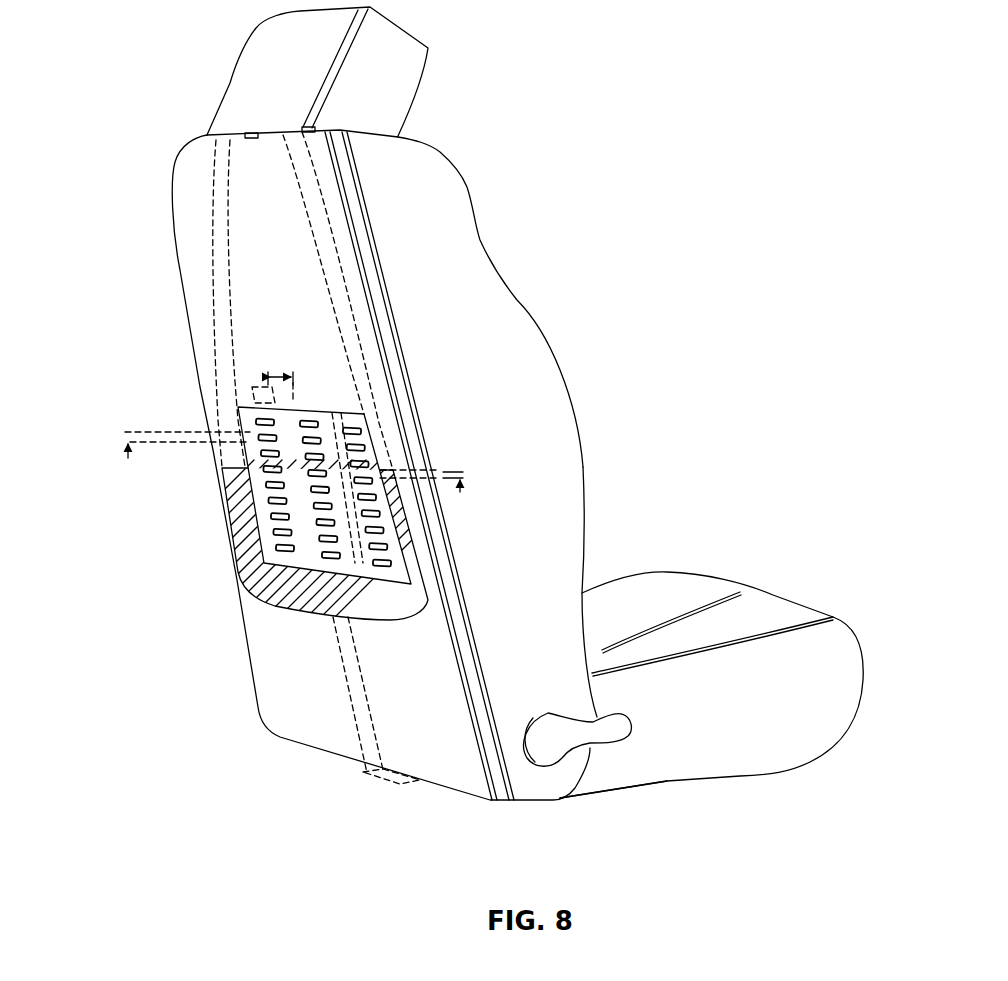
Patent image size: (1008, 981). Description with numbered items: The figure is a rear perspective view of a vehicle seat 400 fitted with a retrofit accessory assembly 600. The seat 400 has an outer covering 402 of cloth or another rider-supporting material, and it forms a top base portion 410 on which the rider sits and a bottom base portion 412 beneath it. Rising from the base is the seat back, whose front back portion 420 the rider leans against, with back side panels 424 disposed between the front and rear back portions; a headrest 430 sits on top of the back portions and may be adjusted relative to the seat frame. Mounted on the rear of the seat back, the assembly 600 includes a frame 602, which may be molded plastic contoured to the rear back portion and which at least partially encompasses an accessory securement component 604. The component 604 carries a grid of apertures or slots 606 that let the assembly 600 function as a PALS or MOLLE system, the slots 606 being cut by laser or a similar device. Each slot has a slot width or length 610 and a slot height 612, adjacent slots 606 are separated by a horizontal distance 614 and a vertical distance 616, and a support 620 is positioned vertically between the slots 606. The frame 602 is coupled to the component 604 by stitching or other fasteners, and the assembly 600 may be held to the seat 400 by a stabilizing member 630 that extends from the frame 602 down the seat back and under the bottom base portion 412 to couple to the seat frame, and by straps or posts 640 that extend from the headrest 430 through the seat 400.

The seat 400 is at (545, 45).
The outer covering 402 is at (572, 513).
The top base portion 410 is at (711, 701).
The bottom base portion 412 is at (677, 783).
The front back portion 420 is at (412, 466).
The back side panels 424 is at (523, 333).
The headrest 430 is at (407, 40).
The retrofit accessory assembly 600 is at (293, 396).
The frame 602 is at (237, 487).
The accessory securement component 604 is at (367, 413).
The slots 606 is at (267, 530).
The slot width or length 610 is at (263, 390).
The slot height 612 is at (453, 469).
The horizontal distance 614 is at (281, 370).
The vertical distance 616 is at (125, 430).
The support 620 is at (333, 410).
The stabilizing member 630 is at (362, 725).
The straps or posts 640 is at (213, 185).